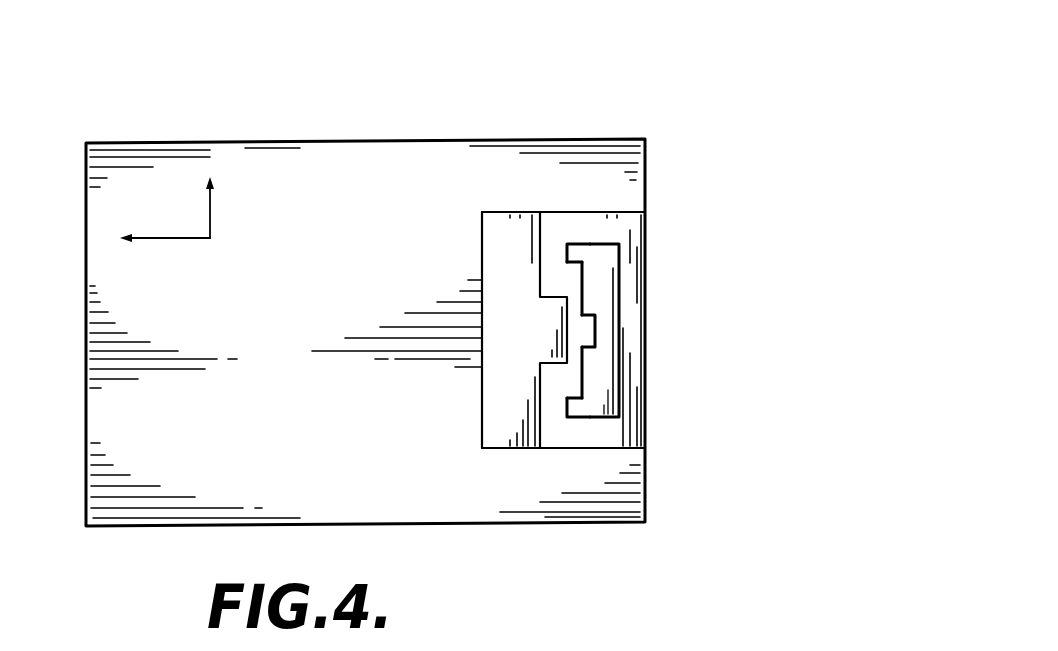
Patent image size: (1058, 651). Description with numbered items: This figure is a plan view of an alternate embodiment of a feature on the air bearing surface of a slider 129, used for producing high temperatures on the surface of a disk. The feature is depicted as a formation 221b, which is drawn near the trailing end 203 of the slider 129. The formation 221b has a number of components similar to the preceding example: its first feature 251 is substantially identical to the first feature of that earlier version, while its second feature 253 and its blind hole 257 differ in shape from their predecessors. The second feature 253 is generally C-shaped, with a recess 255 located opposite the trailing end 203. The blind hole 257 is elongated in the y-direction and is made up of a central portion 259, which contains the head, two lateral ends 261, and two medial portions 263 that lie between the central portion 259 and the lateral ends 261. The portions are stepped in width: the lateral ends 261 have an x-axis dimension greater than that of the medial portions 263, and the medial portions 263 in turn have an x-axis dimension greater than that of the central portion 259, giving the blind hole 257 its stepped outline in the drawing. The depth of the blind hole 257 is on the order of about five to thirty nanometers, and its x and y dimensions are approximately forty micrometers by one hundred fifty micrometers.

The slider 129 is at (676, 117).
The trailing end 203 is at (658, 490).
The formation 221b is at (436, 226).
The first feature 251 is at (488, 422).
The second feature 253 is at (573, 438).
The recess 255 is at (560, 328).
The blind hole 257 is at (634, 387).
The central portion 259 is at (584, 329).
The lateral ends 261 is at (567, 250).
The medial portions 263 is at (578, 281).